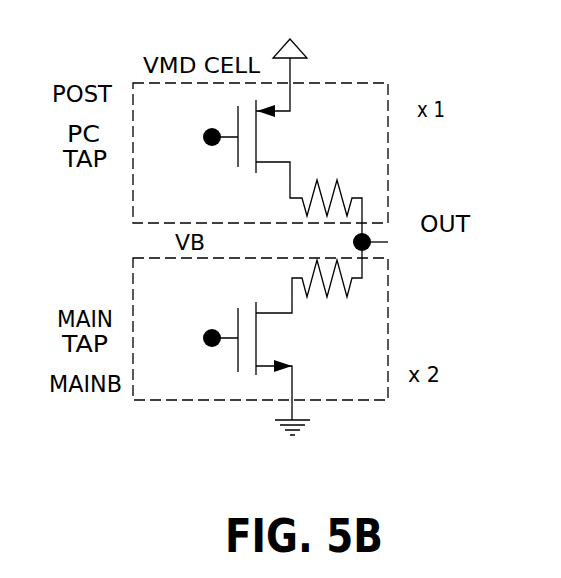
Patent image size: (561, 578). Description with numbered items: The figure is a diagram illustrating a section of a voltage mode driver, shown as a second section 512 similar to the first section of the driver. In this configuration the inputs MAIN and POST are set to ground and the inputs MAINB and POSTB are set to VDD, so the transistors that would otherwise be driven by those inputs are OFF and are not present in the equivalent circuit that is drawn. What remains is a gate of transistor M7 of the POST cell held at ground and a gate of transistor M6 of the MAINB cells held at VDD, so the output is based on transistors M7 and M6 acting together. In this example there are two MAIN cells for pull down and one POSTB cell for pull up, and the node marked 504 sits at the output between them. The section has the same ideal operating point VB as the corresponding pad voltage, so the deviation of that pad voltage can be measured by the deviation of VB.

The output node 504 is at (334, 242).
The second section 512 is at (247, 253).
The transistor M7 is at (250, 140).
The transistor M6 is at (251, 338).